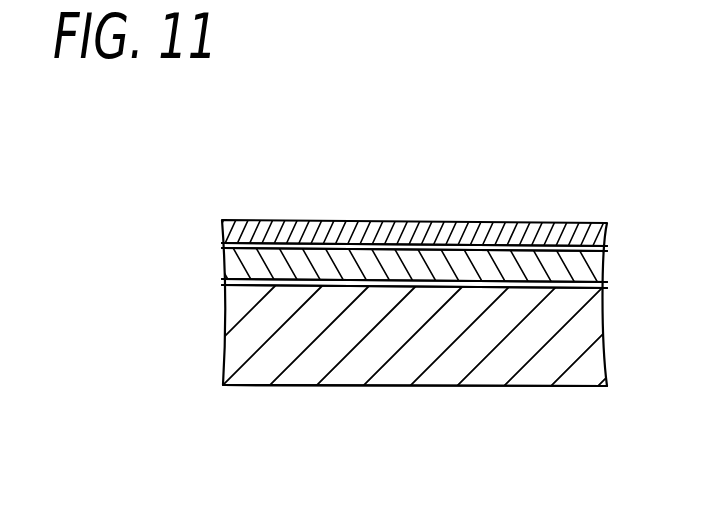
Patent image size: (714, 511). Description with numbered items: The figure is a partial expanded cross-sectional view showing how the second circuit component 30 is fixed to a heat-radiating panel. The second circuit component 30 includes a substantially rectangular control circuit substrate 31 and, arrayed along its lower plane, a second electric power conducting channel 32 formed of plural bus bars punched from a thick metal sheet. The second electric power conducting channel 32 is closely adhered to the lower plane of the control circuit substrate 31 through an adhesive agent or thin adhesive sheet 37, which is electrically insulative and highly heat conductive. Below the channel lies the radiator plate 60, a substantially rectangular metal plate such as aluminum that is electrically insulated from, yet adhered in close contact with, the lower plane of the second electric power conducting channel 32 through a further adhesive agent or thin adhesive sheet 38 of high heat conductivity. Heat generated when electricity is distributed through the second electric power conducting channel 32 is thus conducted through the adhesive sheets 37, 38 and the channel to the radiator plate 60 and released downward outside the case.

The second circuit component 30 is at (523, 165).
The control circuit substrate 31 is at (377, 243).
The adhesive sheet 37 is at (220, 246).
The second electric power conducting channel 32 is at (220, 262).
The adhesive sheet 38 is at (223, 287).
The radiator plate 60 is at (440, 333).